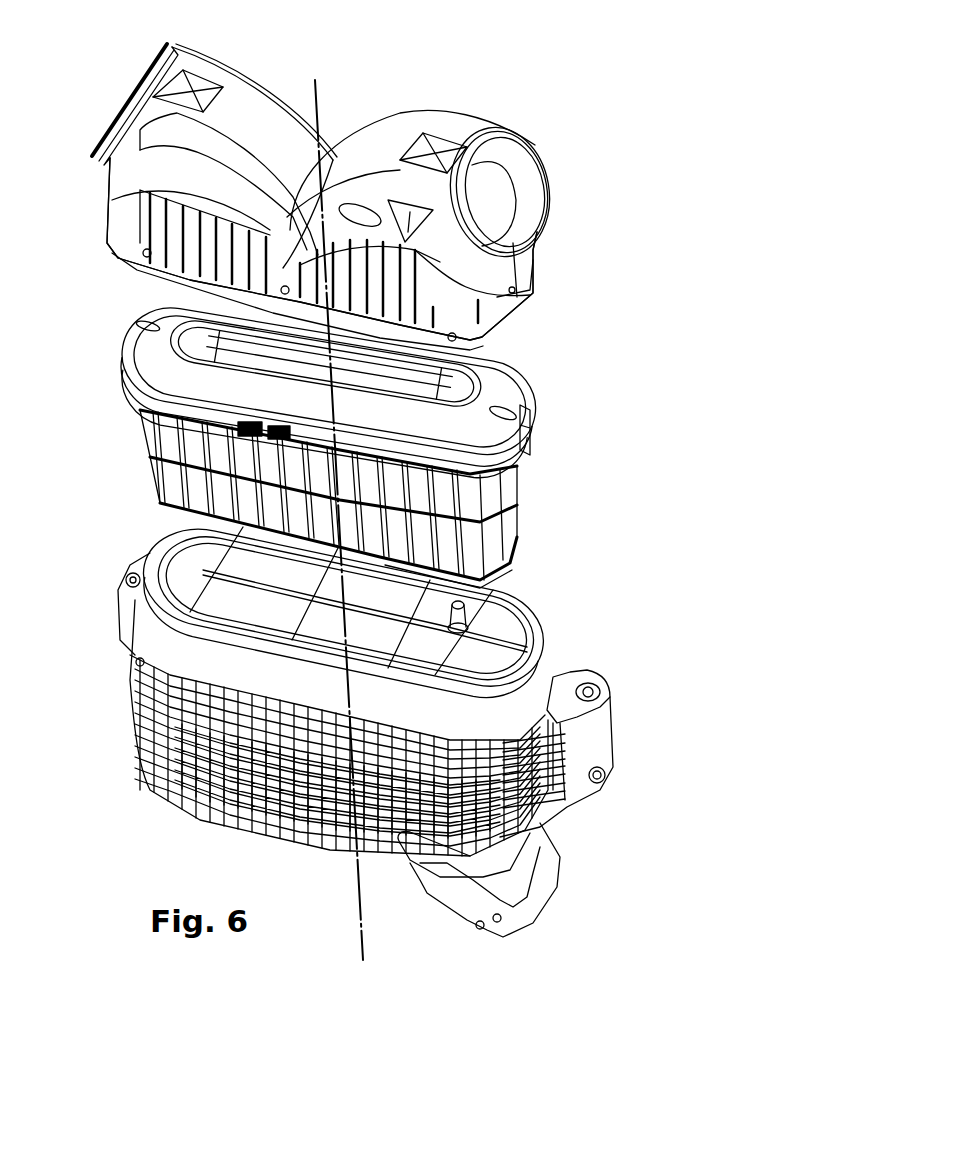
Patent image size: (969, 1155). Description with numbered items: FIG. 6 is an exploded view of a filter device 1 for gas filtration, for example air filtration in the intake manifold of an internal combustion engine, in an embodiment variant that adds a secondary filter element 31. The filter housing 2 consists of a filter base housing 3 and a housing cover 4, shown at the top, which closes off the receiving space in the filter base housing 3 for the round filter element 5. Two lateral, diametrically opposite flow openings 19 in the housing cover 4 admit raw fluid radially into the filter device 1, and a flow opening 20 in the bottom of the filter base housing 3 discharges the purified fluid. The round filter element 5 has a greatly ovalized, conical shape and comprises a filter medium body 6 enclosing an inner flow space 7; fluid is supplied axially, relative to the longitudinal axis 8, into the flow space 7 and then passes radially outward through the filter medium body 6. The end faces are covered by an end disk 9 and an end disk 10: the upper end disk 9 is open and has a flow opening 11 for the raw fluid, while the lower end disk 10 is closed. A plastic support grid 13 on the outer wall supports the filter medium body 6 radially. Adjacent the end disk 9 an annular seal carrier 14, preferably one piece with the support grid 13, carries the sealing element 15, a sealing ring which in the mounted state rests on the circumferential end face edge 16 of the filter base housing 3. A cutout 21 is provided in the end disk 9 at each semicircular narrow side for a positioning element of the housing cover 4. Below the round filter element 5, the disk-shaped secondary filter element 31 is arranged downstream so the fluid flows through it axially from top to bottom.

The filter device 1 is at (592, 123).
The filter housing 2 is at (108, 715).
The filter base housing 3 is at (135, 725).
The housing cover 4 is at (120, 193).
The round filter element 5 is at (563, 446).
The filter medium body 6 is at (177, 453).
The flow space 7 is at (450, 400).
The longitudinal axis 8 is at (316, 90).
The end disk 9 is at (507, 390).
The end disk 10 is at (493, 568).
The flow opening 11 is at (194, 333).
The support grid 13 is at (470, 513).
The seal carrier 14 is at (127, 377).
The sealing element 15 is at (530, 466).
The end face edge 16 is at (138, 638).
The flow openings 19 is at (135, 100).
The flow opening 20 is at (540, 913).
The cutout 21 is at (133, 325).
The secondary filter element 31 is at (540, 619).